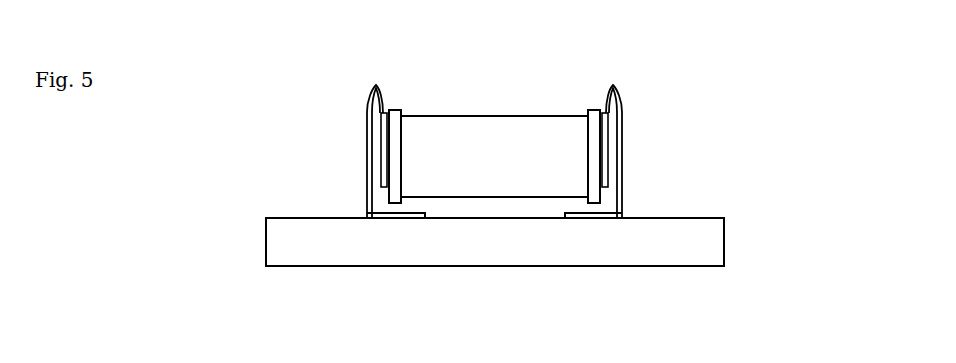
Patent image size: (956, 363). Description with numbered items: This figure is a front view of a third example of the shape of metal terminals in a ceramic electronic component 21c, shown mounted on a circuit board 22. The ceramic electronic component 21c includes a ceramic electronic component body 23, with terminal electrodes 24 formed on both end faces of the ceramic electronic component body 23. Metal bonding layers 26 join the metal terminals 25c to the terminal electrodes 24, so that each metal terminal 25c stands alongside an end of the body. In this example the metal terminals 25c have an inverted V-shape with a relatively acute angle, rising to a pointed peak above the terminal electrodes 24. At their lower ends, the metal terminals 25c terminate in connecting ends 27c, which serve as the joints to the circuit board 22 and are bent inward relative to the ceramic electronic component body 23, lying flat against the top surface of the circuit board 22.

The ceramic electronic component 21c is at (300, 22).
The circuit board 22 is at (715, 248).
The ceramic electronic component body 23 is at (493, 117).
The terminal electrode 24 is at (395, 111).
The metal terminal 25c is at (370, 135).
The metal bonding layer 26 is at (386, 113).
The connecting end 27c is at (393, 213).